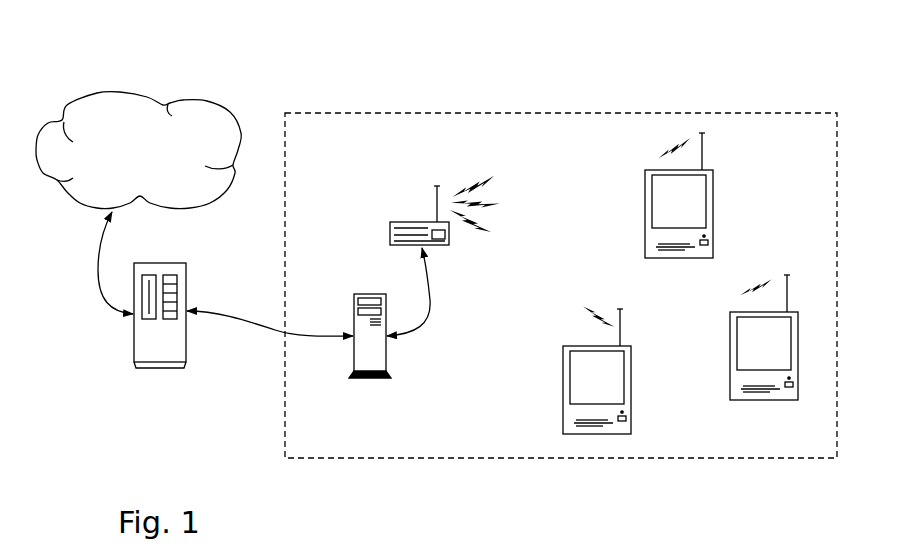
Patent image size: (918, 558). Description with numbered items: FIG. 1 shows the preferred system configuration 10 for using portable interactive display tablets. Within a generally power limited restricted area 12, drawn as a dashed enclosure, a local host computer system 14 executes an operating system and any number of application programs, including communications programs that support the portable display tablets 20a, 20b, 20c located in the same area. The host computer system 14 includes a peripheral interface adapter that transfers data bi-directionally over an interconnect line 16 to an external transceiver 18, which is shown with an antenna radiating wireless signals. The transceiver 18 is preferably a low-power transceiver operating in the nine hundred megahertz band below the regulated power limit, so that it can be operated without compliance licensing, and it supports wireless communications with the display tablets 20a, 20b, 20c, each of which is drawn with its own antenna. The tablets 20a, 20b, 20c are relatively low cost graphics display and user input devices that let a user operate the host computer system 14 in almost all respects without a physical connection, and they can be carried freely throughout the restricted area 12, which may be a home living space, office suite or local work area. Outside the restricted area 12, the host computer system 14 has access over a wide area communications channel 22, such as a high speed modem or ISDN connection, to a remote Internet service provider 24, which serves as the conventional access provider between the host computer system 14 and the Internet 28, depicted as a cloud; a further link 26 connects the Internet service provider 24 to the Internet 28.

The system configuration 10 is at (620, 88).
The restricted area 12 is at (339, 432).
The local host computer system 14 is at (387, 358).
The interconnect line 16 is at (432, 292).
The external transceiver 18 is at (397, 222).
The portable display tablet 20a is at (713, 198).
The portable display tablet 20b is at (730, 336).
The portable display tablet 20c is at (632, 403).
The wide area communications channel 22 is at (219, 311).
The Internet service provider 24 is at (186, 345).
The link between Internet service provider and Internet 26 is at (101, 307).
The Internet 28 is at (205, 192).